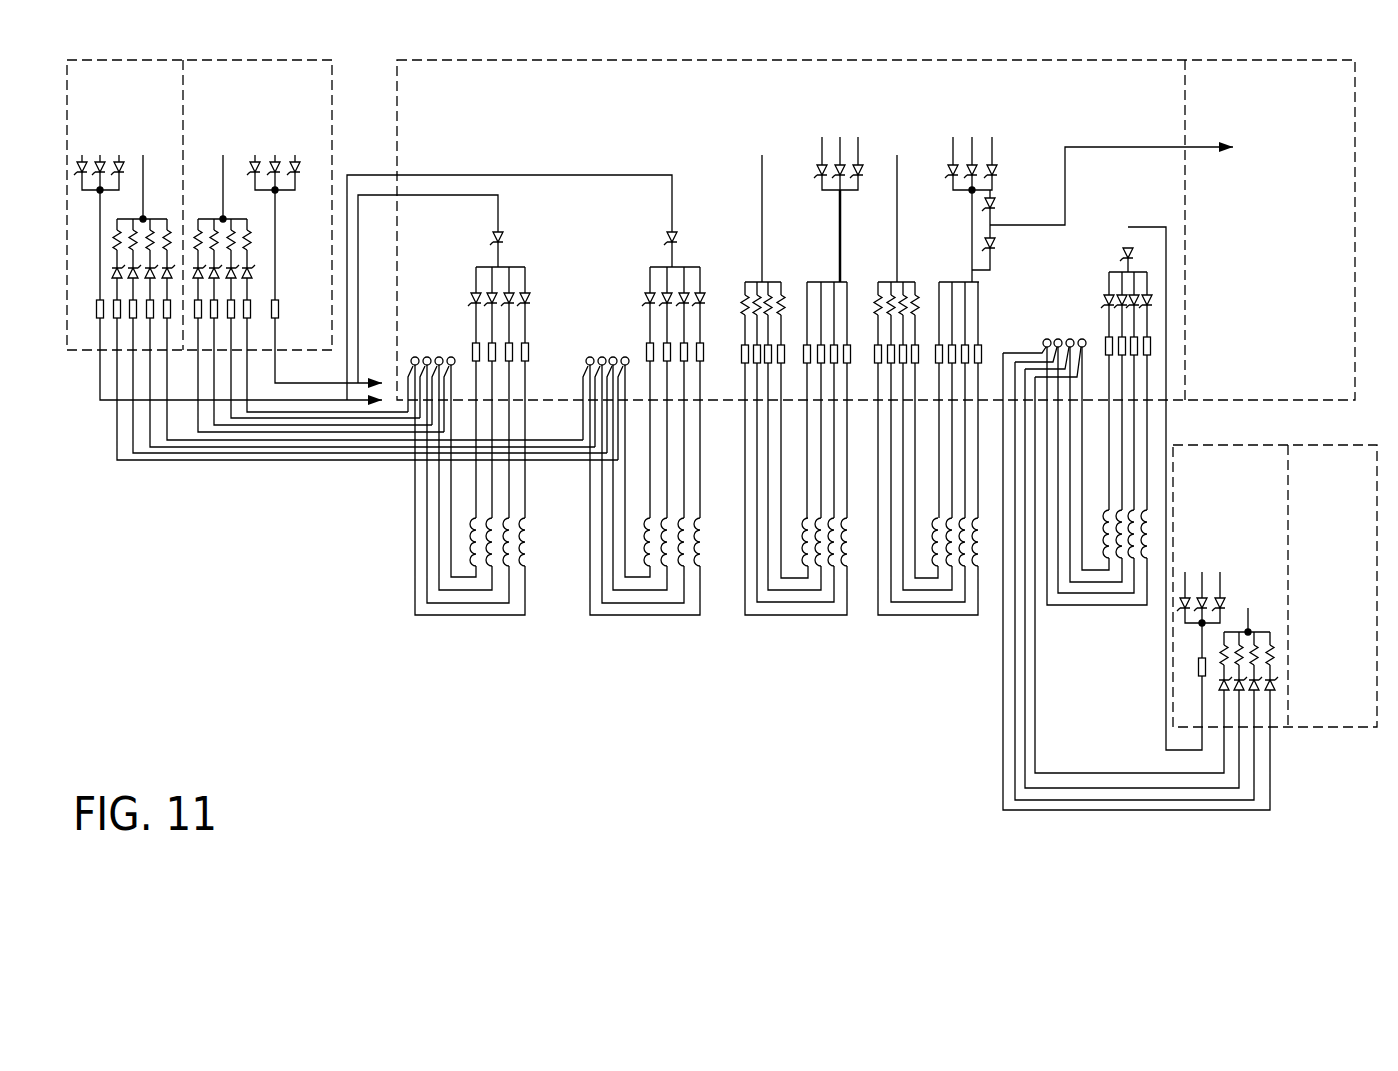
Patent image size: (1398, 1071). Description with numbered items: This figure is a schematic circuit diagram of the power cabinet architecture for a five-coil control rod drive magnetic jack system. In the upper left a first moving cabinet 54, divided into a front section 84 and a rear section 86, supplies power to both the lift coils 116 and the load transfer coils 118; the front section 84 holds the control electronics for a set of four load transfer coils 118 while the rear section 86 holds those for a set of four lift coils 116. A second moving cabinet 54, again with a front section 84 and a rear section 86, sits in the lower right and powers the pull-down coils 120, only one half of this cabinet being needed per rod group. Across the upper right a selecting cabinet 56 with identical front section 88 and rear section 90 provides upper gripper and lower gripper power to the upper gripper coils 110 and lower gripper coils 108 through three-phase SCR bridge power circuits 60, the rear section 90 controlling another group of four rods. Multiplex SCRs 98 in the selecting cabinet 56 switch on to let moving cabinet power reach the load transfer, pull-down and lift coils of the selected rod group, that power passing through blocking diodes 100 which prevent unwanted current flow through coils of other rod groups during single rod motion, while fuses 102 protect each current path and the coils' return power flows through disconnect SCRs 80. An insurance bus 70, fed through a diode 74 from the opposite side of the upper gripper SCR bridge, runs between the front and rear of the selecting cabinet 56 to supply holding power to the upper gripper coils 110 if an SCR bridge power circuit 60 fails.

The moving cabinet 54 is at (137, 60).
The selecting cabinet 56 is at (695, 60).
The SCR bridge power circuit 60 is at (112, 122).
The insurance bus 70 is at (1093, 147).
The diode 74 is at (996, 205).
The disconnect SCR 80 is at (258, 276).
The front section 84 is at (92, 97).
The rear section 86 is at (221, 97).
The front section 88 is at (560, 102).
The rear section 90 is at (1254, 102).
The multiplex SCR 98 is at (494, 233).
The blocking diode 100 is at (535, 291).
The fuse 102 is at (254, 323).
The lower gripper coil 108 is at (853, 559).
The upper gripper coil 110 is at (986, 559).
The lift coil 116 is at (533, 565).
The load transfer coil 118 is at (705, 564).
The pull-down coil 120 is at (1146, 547).